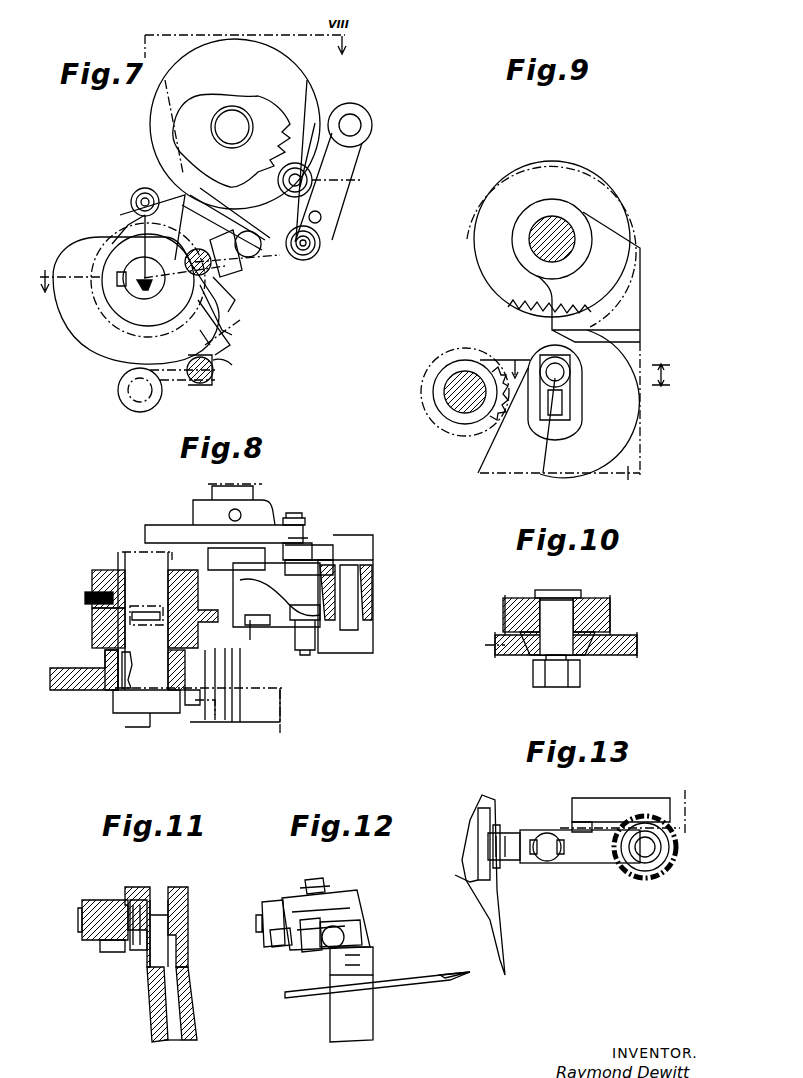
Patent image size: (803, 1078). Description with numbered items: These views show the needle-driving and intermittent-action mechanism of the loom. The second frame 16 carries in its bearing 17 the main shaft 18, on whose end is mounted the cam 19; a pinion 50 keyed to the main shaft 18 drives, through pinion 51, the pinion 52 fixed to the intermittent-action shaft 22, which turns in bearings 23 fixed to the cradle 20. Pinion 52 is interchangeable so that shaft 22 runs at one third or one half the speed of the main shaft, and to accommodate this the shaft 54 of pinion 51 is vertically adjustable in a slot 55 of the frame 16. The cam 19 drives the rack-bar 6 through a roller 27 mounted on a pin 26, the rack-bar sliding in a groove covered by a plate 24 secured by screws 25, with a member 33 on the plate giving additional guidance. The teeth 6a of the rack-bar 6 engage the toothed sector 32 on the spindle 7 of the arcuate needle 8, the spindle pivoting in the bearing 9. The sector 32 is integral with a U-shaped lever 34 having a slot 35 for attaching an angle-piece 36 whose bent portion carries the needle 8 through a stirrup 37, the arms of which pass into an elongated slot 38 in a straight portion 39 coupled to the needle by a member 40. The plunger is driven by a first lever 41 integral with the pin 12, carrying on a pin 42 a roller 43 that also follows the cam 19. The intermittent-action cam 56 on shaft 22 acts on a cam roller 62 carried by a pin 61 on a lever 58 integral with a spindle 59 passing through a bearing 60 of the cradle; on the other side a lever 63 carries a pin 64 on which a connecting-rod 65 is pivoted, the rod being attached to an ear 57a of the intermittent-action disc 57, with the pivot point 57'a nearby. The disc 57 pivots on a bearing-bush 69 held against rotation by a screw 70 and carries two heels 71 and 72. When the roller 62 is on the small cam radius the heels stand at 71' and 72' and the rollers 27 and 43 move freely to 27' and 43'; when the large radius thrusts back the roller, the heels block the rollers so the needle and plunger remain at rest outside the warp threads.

In FIG. 8, the rack-bar 6 is at (272, 715).
In FIG. 11, the rack-bar 6 is at (112, 955).
In FIG. 12, the rack-bar 6 is at (272, 942).
In FIG. 13, the rack-bar 6 is at (632, 800).
In FIG. 13, the teeth of the rack-bar 6a is at (590, 822).
In FIG. 11, the spindle 7 is at (172, 956).
In FIG. 13, the spindle 7 is at (650, 855).
In FIG. 12, the arcuate needle 8 is at (416, 982).
In FIG. 13, the arcuate needle 8 is at (480, 938).
In FIG. 11, the bearing 9 is at (192, 1008).
In FIG. 12, the bearing 9 is at (345, 1020).
In FIG. 7, the pin 12 is at (137, 393).
In FIG. 8, the pin 12 is at (130, 715).
In FIG. 9, the second frame 16 is at (575, 422).
In FIG. 10, the second frame 16 is at (625, 635).
In FIG. 8, the bearing 17 is at (92, 576).
In FIG. 7, the main shaft 18 is at (135, 290).
In FIG. 9, the main shaft 18 is at (447, 398).
In FIG. 8, the main shaft 18 is at (136, 552).
In FIG. 7, the cam 19 is at (80, 255).
In FIG. 8, the cam 19 is at (75, 690).
In FIG. 9, the cradle 20 is at (640, 336).
In FIG. 7, the intermittent-action shaft 22 is at (240, 124).
In FIG. 9, the intermittent-action shaft 22 is at (538, 246).
In FIG. 8, the intermittent-action shaft 22 is at (256, 497).
In FIG. 7, the bearings 23 is at (187, 130).
In FIG. 9, the bearings 23 is at (525, 262).
In FIG. 8, the bearings 23 is at (285, 610).
In FIG. 11, the plate 24 is at (118, 900).
In FIG. 12, the plate 24 is at (356, 906).
In FIG. 12, the screws 25 is at (312, 878).
In FIG. 8, the pin 26 is at (172, 657).
In FIG. 7, the roller 27 is at (265, 262).
In FIG. 8, the roller 27 is at (235, 709).
In FIG. 7, the roller position 27' is at (235, 306).
In FIG. 11, the toothed sector 32 is at (138, 952).
In FIG. 13, the toothed sector 32 is at (668, 847).
In FIG. 11, the member 33 is at (95, 893).
In FIG. 12, the member 33 is at (268, 900).
In FIG. 13, the U-shaped lever 34 is at (603, 862).
In FIG. 13, the slot 35 is at (560, 850).
In FIG. 13, the angle-piece 36 is at (512, 832).
In FIG. 13, the stirrup 37 is at (497, 868).
In FIG. 12, the elongated slot 38 is at (305, 950).
In FIG. 12, the straight portion 39 is at (362, 930).
In FIG. 13, the straight portion 39 is at (486, 880).
In FIG. 12, the member 40 is at (372, 965).
In FIG. 7, the first lever 41 is at (190, 385).
In FIG. 8, the first lever 41 is at (190, 700).
In FIG. 7, the pin 42 is at (205, 385).
In FIG. 7, the roller 43 is at (236, 379).
In FIG. 8, the roller 43 is at (198, 724).
In FIG. 7, the roller position 43' is at (142, 322).
In FIG. 9, the pinion 50 is at (422, 374).
In FIG. 9, the pinion 51 is at (605, 395).
In FIG. 10, the pinion 51 is at (520, 597).
In FIG. 9, the pinion 52 is at (592, 170).
In FIG. 9, the shaft 54 is at (541, 437).
In FIG. 10, the shaft 54 is at (545, 655).
In FIG. 9, the slot 55 is at (578, 372).
In FIG. 7, the intermittent-action cam 56 is at (152, 108).
In FIG. 8, the intermittent-action cam 56 is at (290, 516).
In FIG. 7, the intermittent-action disc 57 is at (138, 236).
In FIG. 8, the intermittent-action disc 57 is at (140, 658).
In FIG. 7, the ear 57a is at (142, 190).
In FIG. 7, the bracket screw 57'a is at (111, 198).
In FIG. 7, the lever 58 is at (316, 112).
In FIG. 8, the lever 58 is at (320, 545).
In FIG. 7, the spindle 59 is at (355, 123).
In FIG. 8, the spindle 59 is at (355, 575).
In FIG. 8, the bearing 60 is at (365, 605).
In FIG. 7, the pin 61 is at (322, 216).
In FIG. 8, the pin 61 is at (312, 543).
In FIG. 7, the cam roller 62 is at (360, 180).
In FIG. 8, the cam roller 62 is at (320, 540).
In FIG. 7, the lever 63 is at (348, 162).
In FIG. 7, the pin 64 is at (318, 247).
In FIG. 8, the pin 64 is at (308, 655).
In FIG. 7, the connecting-rod 65 is at (318, 238).
In FIG. 8, the connecting-rod 65 is at (262, 640).
In FIG. 8, the bearing-bush 69 is at (118, 560).
In FIG. 8, the screw 70 is at (85, 598).
In FIG. 7, the heel 71 is at (237, 262).
In FIG. 7, the heel position 71' is at (231, 219).
In FIG. 7, the heel 72 is at (230, 335).
In FIG. 8, the heel 72 is at (242, 698).
In FIG. 7, the heel position 72' is at (241, 332).